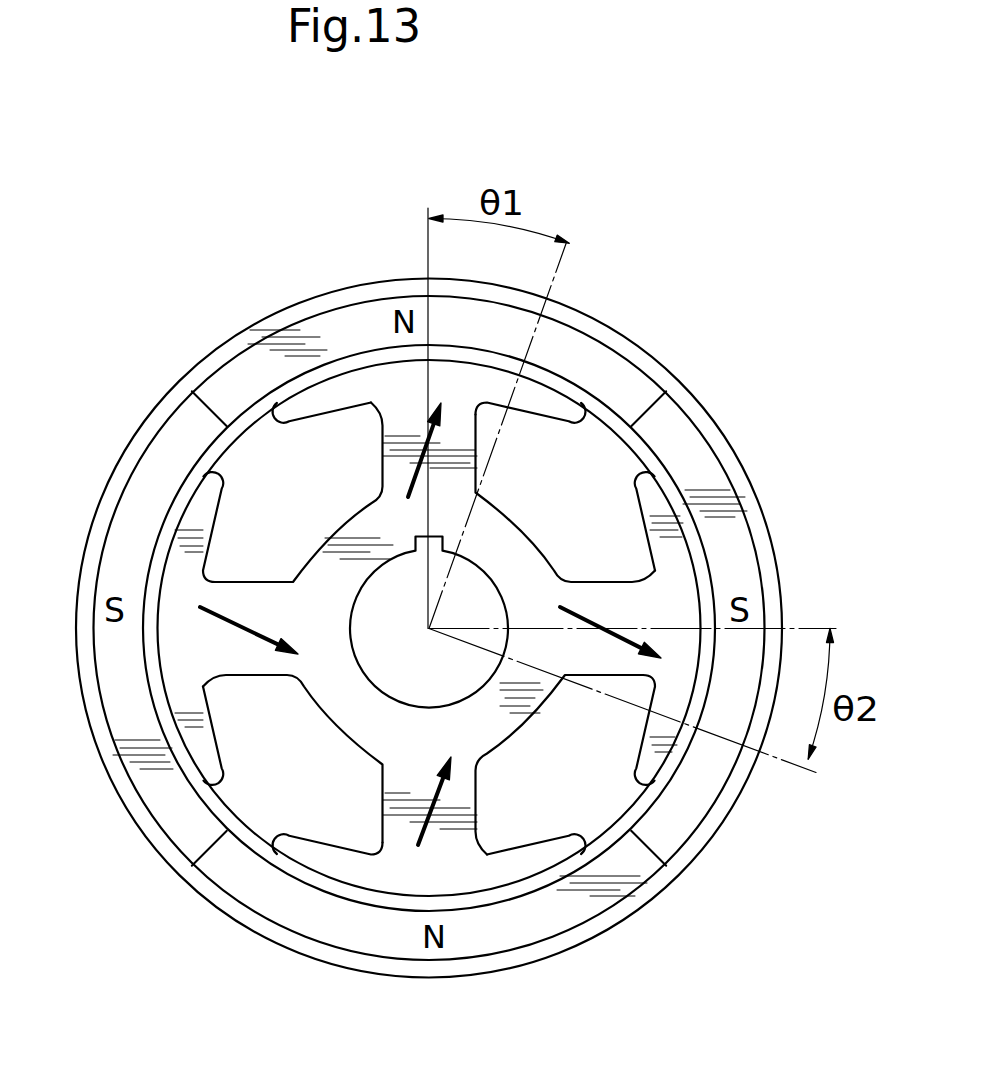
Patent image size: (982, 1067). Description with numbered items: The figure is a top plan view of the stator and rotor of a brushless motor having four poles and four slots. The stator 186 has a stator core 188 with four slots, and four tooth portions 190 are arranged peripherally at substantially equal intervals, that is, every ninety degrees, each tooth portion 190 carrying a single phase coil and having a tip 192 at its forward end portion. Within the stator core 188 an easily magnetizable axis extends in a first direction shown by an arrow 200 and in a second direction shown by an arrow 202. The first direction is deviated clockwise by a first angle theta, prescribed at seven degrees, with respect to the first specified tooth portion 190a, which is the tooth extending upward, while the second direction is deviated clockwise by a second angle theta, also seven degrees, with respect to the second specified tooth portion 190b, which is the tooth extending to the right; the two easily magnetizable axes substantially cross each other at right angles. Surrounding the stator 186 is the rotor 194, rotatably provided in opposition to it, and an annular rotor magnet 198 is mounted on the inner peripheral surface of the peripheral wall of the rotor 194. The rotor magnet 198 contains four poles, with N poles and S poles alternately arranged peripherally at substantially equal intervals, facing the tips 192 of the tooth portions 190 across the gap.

The stator 186 is at (667, 478).
The stator core 188 is at (546, 706).
The tooth portion 190 is at (249, 583).
The first specified tooth portion 190a is at (478, 437).
The second specified tooth portion 190b is at (627, 583).
The tip 192 is at (327, 382).
The rotor 194 is at (144, 850).
The rotor magnet 198 is at (303, 923).
The arrow 200 is at (382, 490).
The arrow 202 is at (587, 600).